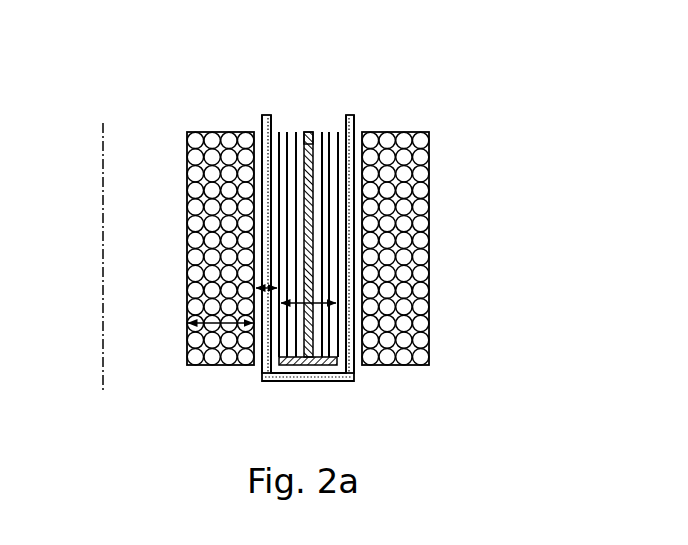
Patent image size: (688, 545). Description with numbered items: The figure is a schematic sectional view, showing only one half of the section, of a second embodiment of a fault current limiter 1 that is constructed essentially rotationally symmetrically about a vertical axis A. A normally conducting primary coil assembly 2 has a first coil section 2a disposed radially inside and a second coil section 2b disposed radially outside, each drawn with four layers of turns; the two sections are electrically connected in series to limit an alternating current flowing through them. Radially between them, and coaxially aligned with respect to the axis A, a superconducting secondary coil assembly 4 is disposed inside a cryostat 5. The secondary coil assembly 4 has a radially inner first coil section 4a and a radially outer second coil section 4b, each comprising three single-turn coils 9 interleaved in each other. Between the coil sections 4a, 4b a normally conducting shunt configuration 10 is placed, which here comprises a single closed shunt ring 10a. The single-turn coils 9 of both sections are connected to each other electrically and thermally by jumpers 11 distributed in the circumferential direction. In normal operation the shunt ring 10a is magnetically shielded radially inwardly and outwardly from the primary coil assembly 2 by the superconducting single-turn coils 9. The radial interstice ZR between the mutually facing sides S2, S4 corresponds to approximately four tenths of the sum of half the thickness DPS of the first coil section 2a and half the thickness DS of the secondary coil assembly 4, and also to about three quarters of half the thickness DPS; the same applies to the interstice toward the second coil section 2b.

The fault current limiter 1 is at (150, 96).
The vertical axis A is at (103, 183).
The primary coil assembly 2 is at (202, 242).
The first coil section 2a is at (207, 368).
The second coil section 2b is at (408, 368).
The secondary coil assembly 4 is at (304, 233).
The first coil section of the secondary coil assembly 4a is at (287, 125).
The second coil section of the secondary coil assembly 4b is at (329, 125).
The cryostat 5 is at (263, 368).
The single-turn coils 9 is at (265, 135).
The shunt configuration 10 is at (304, 229).
The shunt ring 10a is at (307, 133).
The jumpers 11 is at (292, 360).
The side of the secondary coil assembly S4 is at (277, 177).
The side of the first coil section S2 is at (250, 207).
The radial interstice ZR is at (262, 285).
The thickness of the first coil section DPS is at (216, 322).
The thickness of the secondary coil assembly DS is at (319, 306).